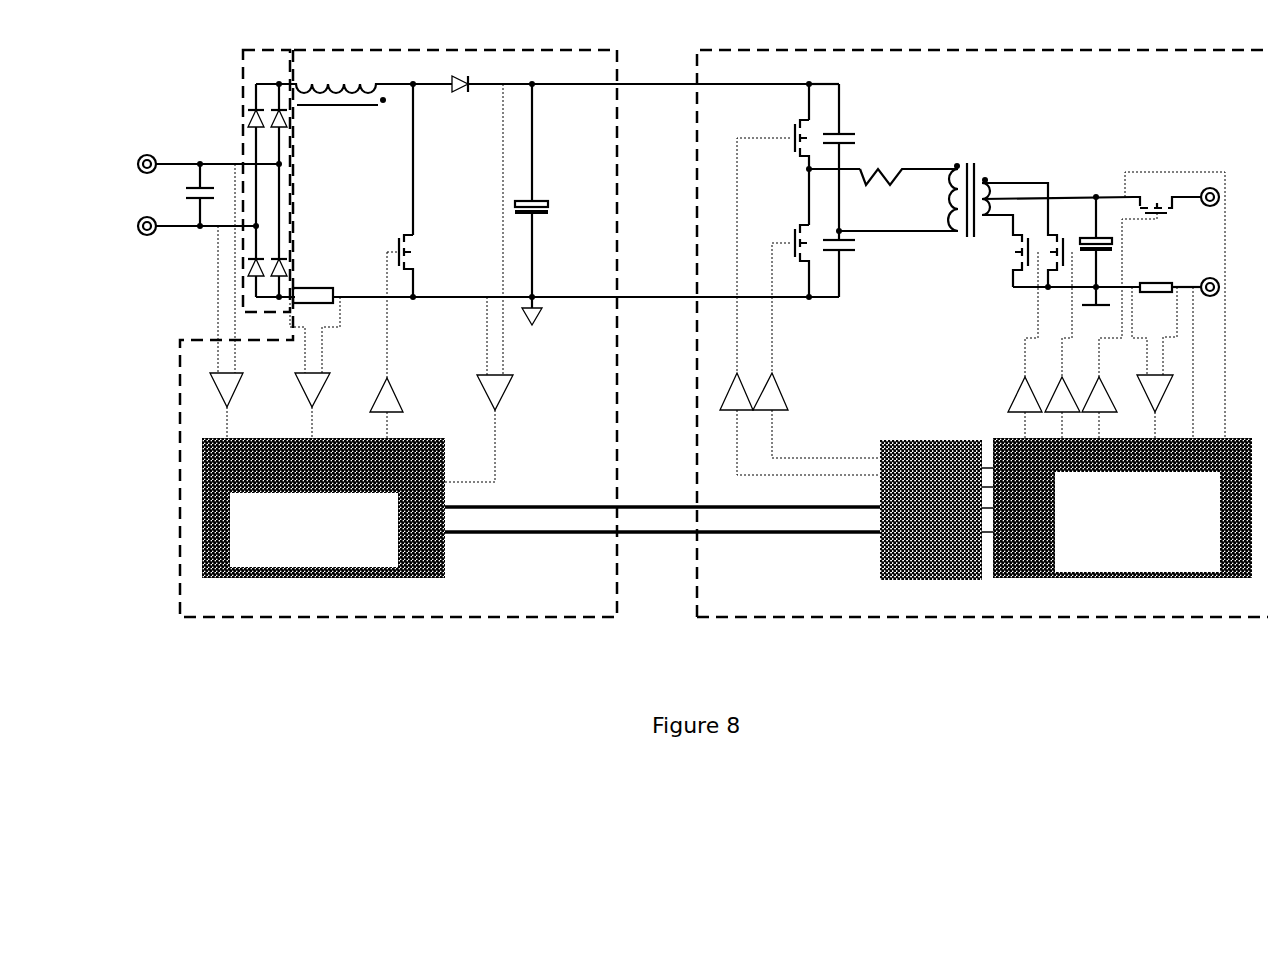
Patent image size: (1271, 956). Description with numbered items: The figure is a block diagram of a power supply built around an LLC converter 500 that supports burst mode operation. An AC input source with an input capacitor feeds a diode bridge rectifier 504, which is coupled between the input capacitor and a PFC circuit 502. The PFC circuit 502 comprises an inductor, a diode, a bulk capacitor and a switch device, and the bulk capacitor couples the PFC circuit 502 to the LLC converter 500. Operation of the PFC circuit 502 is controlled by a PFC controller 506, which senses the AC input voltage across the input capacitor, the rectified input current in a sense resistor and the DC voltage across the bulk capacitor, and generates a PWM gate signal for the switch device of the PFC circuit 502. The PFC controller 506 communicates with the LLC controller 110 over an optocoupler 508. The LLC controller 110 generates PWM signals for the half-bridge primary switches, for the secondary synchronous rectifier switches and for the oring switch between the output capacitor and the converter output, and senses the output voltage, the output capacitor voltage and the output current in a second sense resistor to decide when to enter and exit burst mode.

The LLC converter 500 is at (1254, 75).
The PFC circuit 502 is at (592, 74).
The diode bridge rectifier 504 is at (280, 72).
The PFC controller 506 is at (331, 557).
The optocoupler 508 is at (943, 560).
The LLC controller 110 is at (1156, 562).